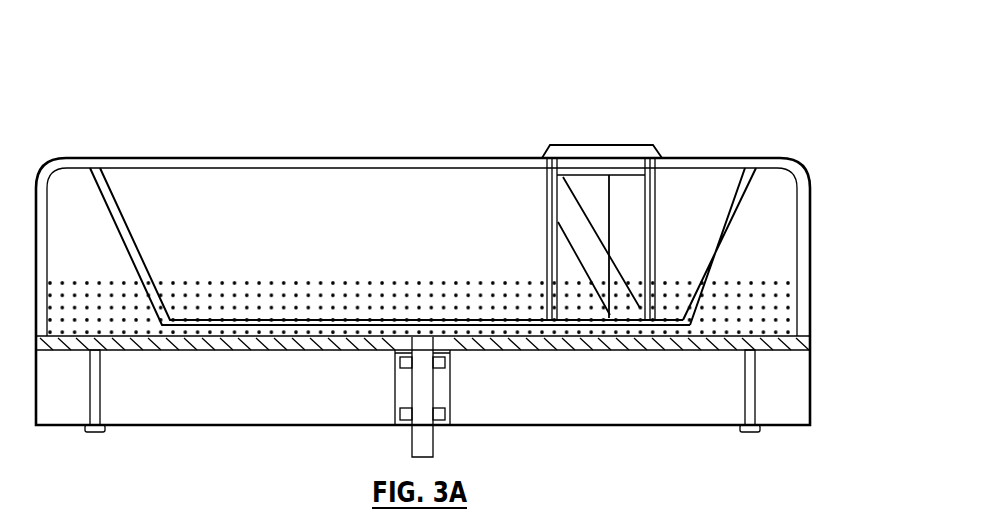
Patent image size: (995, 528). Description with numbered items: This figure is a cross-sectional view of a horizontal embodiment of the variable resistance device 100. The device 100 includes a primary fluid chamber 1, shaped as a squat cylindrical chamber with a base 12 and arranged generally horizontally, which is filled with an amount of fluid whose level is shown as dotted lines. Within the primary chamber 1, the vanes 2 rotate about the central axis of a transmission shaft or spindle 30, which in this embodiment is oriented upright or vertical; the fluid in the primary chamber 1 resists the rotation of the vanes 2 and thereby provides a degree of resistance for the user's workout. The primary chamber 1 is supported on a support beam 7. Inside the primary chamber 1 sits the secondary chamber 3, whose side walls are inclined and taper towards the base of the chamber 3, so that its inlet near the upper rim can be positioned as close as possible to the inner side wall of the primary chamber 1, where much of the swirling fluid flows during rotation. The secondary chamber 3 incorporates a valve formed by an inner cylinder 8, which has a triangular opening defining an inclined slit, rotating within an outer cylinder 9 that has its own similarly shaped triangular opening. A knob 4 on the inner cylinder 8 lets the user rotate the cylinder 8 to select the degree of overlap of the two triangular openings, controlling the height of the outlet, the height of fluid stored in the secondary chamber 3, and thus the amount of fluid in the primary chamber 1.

The device 100 is at (177, 100).
The primary fluid chamber 1 is at (740, 157).
The vanes 2 is at (775, 256).
The secondary chamber 3 is at (148, 253).
The knob 4 is at (600, 145).
The support beam 7 is at (795, 397).
The inner cylinder 8 is at (574, 205).
The outer cylinder 9 is at (616, 205).
The base 12 is at (775, 347).
The spindle 30 is at (410, 448).